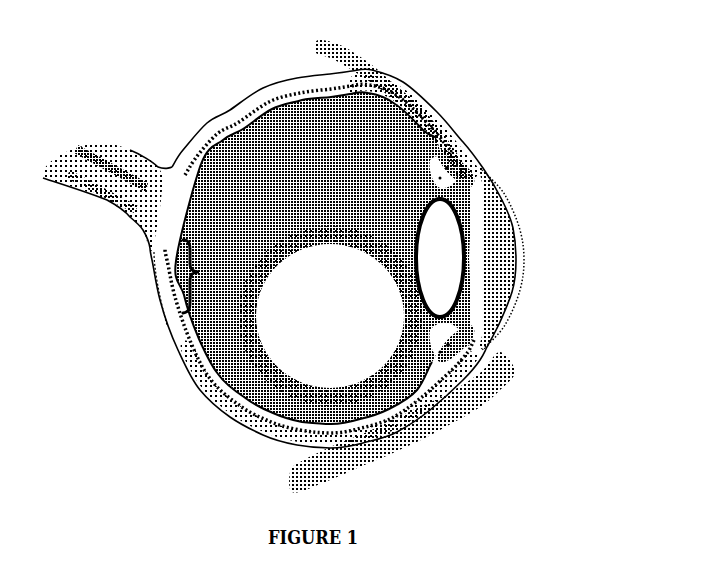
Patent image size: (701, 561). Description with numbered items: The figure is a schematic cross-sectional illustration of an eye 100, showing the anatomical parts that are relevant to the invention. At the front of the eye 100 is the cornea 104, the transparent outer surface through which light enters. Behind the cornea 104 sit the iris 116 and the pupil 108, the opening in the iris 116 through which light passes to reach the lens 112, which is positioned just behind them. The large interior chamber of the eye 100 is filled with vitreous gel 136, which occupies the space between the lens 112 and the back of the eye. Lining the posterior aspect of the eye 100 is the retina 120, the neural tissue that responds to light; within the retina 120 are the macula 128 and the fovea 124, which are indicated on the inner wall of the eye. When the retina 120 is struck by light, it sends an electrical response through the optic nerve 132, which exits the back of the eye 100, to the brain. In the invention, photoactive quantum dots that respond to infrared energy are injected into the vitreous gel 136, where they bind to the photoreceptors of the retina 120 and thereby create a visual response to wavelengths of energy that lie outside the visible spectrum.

The eye 100 is at (318, 266).
The cornea 104 is at (498, 198).
The pupil 108 is at (467, 261).
The lens 112 is at (440, 292).
The iris 116 is at (465, 196).
The retina 120 is at (223, 380).
The fovea 124 is at (173, 277).
The macula 128 is at (197, 272).
The optic nerve 132 is at (77, 153).
The vitreous gel 136 is at (273, 207).